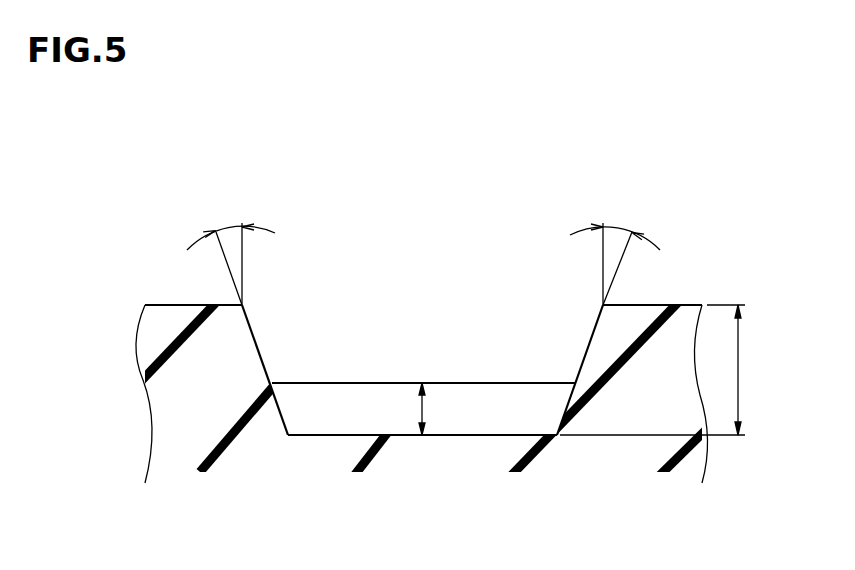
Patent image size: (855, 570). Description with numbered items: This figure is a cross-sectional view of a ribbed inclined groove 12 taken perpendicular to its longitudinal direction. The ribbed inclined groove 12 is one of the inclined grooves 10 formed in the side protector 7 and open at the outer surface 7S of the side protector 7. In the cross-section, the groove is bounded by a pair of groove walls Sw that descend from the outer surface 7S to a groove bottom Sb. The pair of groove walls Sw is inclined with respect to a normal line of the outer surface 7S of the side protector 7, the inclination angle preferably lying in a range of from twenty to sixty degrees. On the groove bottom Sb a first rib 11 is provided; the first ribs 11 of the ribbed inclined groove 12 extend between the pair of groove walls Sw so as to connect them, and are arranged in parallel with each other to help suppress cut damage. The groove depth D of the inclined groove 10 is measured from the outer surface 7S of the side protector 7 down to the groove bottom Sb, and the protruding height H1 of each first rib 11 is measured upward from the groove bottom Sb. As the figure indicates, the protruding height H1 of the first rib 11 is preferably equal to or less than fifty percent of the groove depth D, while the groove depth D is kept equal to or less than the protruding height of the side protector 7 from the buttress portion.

The outer surface 7S is at (653, 305).
The side protector 7 is at (472, 273).
The ribbed inclined groove 12 is at (422, 354).
The inclined groove 10 is at (422, 354).
The first rib 11 is at (471, 383).
The groove wall Sw is at (258, 343).
The groove bottom Sb is at (327, 436).
The protruding height H1 is at (422, 408).
The groove depth D is at (663, 370).